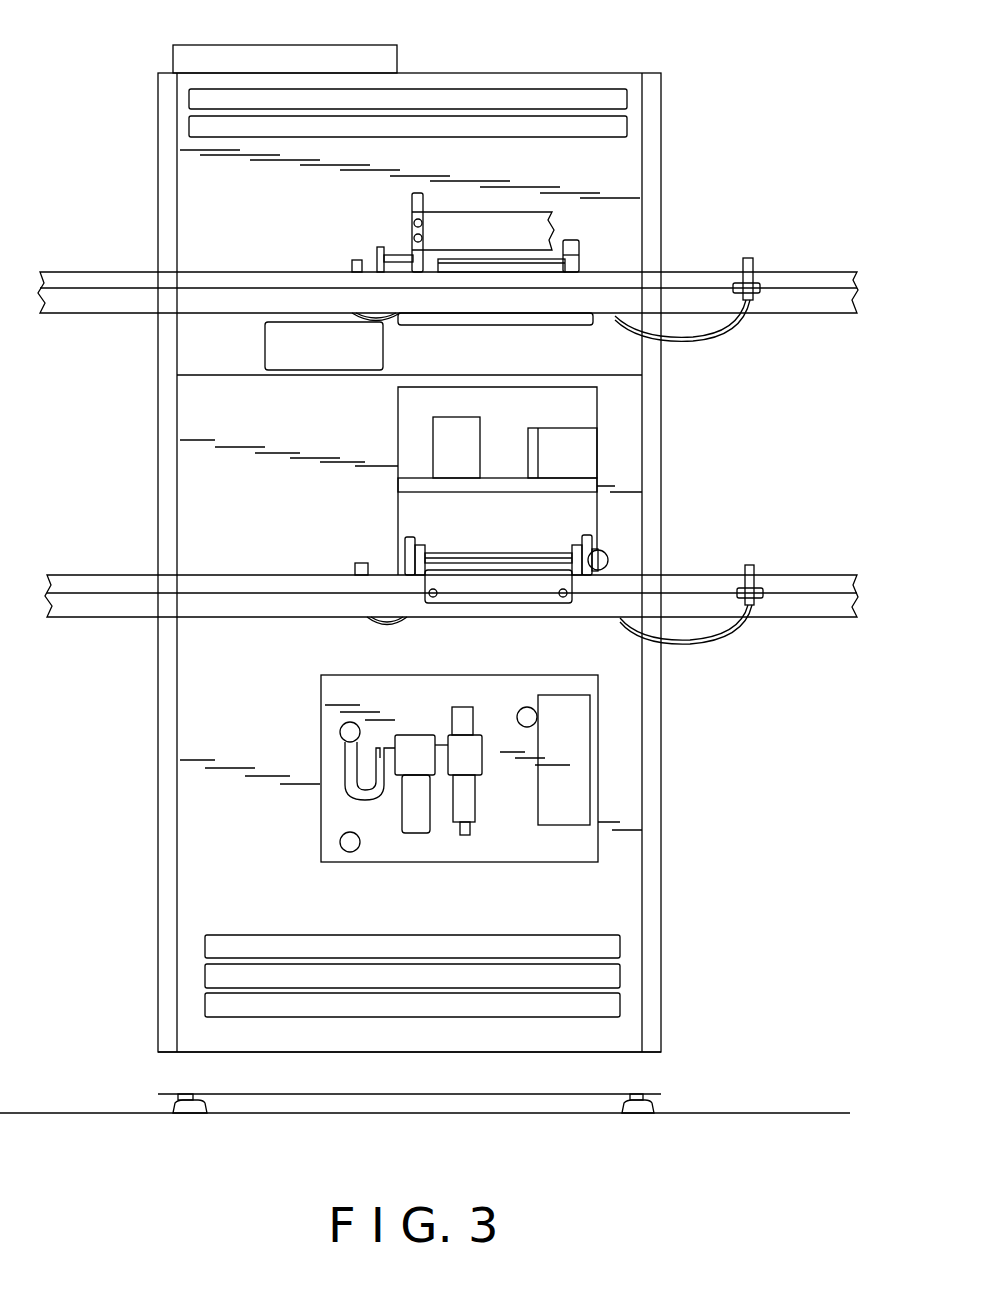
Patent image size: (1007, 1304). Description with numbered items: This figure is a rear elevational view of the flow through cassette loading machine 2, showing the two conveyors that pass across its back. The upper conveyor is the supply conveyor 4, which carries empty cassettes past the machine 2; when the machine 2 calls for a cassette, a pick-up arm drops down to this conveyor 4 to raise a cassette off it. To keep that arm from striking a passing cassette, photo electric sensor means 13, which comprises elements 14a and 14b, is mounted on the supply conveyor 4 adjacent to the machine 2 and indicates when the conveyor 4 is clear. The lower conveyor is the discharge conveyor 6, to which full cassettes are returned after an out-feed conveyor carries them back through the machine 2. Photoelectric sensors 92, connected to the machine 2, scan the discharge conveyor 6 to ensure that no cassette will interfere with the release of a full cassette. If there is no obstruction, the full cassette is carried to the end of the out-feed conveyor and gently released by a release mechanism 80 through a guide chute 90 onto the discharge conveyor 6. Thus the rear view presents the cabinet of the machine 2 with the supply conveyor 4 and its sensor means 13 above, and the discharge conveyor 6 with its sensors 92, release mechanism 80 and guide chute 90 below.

The cassette loading machine 2 is at (543, 68).
The supply conveyor 4 is at (98, 272).
The discharge conveyor 6 is at (810, 576).
The photo electric sensor means 13 is at (363, 250).
The sensor element 14a is at (358, 258).
The sensor element 14b is at (755, 258).
The release mechanism 80 is at (603, 553).
The guide chute 90 is at (503, 590).
The photoelectric sensors 92 is at (362, 560).